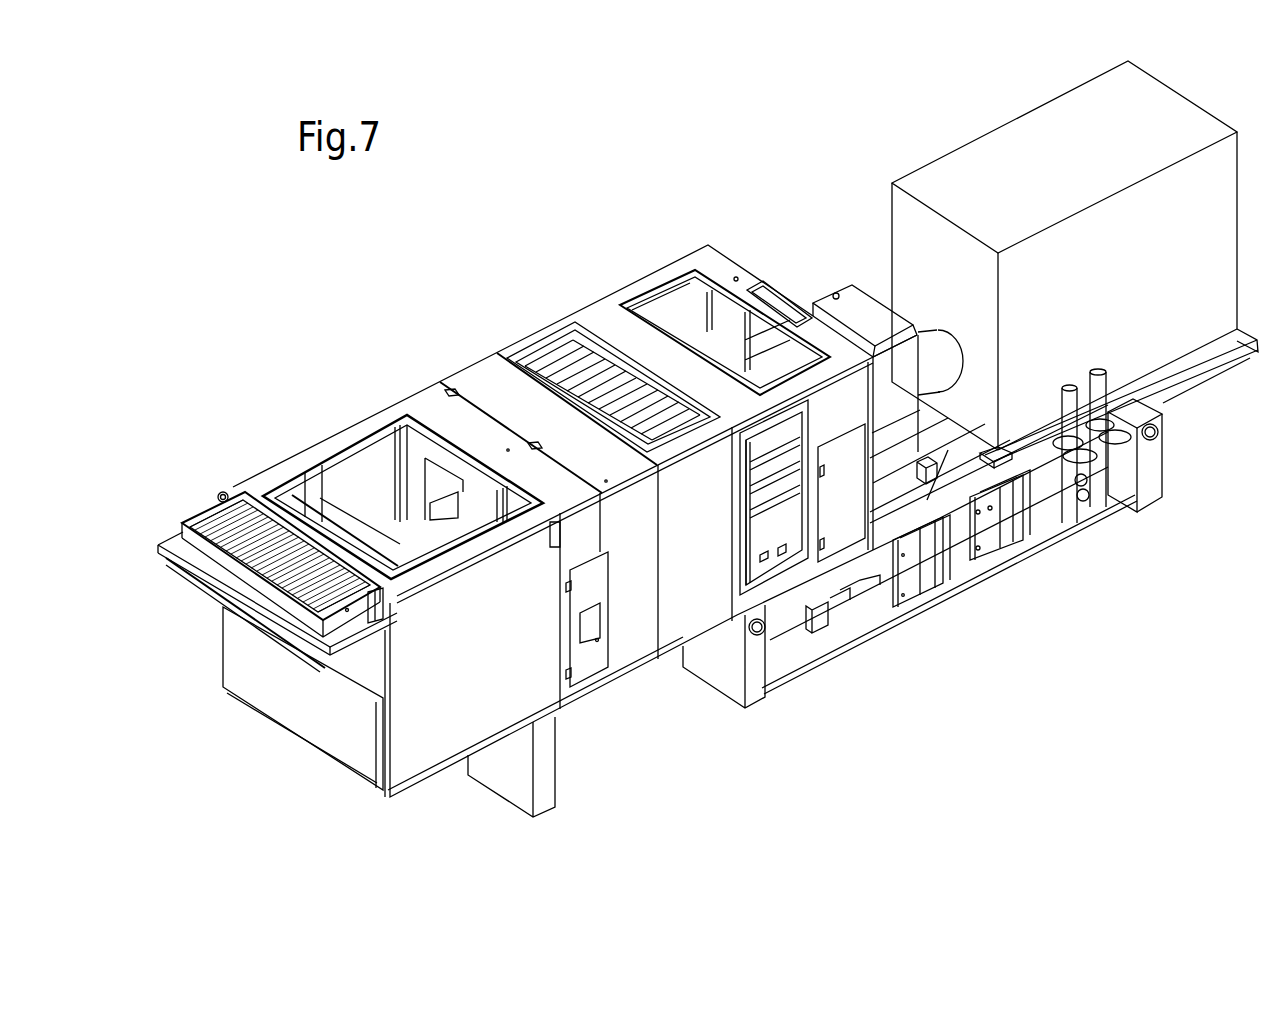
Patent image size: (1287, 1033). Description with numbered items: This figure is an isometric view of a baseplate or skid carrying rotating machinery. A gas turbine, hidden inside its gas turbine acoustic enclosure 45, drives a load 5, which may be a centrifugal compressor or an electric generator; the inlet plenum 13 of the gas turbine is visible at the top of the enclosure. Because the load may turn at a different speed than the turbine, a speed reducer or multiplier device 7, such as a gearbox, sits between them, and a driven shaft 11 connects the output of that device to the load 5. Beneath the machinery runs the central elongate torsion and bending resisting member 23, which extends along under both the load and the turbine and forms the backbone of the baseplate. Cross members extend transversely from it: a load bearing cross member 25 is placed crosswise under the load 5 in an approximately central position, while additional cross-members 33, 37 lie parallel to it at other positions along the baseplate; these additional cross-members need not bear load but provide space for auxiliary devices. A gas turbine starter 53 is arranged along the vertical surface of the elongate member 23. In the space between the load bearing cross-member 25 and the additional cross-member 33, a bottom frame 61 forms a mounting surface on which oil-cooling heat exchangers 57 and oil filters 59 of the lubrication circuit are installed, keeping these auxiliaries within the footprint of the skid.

The load 5 is at (1000, 142).
The speed reducer or multiplier device 7 is at (845, 313).
The driven shaft 11 is at (945, 350).
The inlet plenum 13 is at (355, 510).
The central elongate torsion and bending resisting member 23 is at (607, 690).
The load bearing cross member 25 is at (1160, 475).
The additional cross-member 33 is at (730, 680).
The additional cross-member 37 is at (503, 775).
The gas turbine acoustic enclosure 45 is at (633, 547).
The gas turbine starter 53 is at (787, 620).
The oil-cooling heat exchangers 57 is at (935, 592).
The oil filters 59 is at (1090, 510).
The bottom frame 61 is at (875, 615).